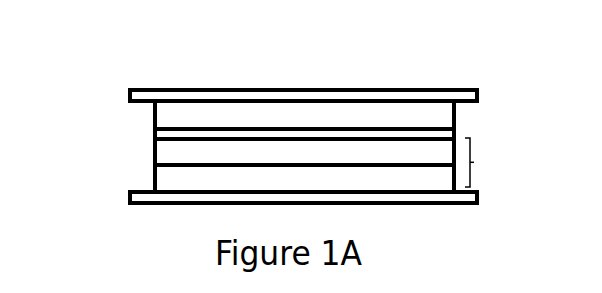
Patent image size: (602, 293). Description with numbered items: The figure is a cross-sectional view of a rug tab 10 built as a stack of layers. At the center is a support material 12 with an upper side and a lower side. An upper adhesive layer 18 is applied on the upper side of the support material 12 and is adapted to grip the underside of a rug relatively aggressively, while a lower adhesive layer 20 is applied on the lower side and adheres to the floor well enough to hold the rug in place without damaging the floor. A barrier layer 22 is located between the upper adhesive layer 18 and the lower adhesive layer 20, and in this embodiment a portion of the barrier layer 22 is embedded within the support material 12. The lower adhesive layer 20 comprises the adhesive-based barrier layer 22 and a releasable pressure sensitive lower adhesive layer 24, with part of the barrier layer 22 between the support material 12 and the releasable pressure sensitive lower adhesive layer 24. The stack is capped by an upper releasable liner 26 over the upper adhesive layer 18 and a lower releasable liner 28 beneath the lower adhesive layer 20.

The rug tab 10 is at (178, 48).
The support material 12 is at (440, 135).
The upper adhesive layer 18 is at (163, 117).
The lower adhesive layer 20 is at (484, 162).
The barrier layer 22 is at (172, 153).
The releasable pressure sensitive lower adhesive layer 24 is at (172, 175).
The upper releasable liner 26 is at (445, 97).
The lower releasable liner 28 is at (418, 197).